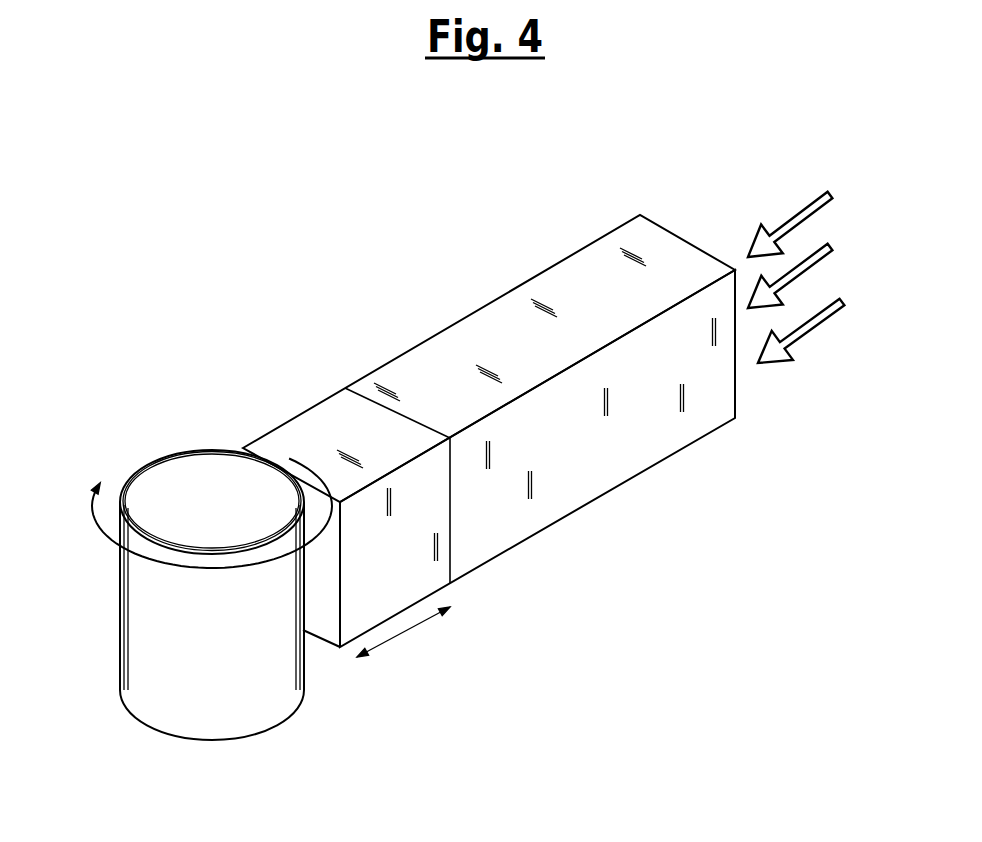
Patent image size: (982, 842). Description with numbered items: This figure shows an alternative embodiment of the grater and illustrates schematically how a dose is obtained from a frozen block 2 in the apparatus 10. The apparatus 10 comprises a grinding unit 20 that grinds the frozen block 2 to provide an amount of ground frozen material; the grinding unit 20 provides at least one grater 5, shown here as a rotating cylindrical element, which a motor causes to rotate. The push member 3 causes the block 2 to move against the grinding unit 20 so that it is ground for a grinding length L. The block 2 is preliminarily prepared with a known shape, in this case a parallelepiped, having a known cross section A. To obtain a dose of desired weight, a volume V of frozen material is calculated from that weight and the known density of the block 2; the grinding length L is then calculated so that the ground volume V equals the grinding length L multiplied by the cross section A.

The apparatus 10 is at (155, 333).
The frozen block 2 is at (585, 487).
The push member 3 is at (802, 342).
The grater 5 is at (165, 708).
The grinding unit 20 is at (163, 479).
The volume V is at (327, 413).
The cross section A is at (325, 620).
The grinding length L is at (412, 630).